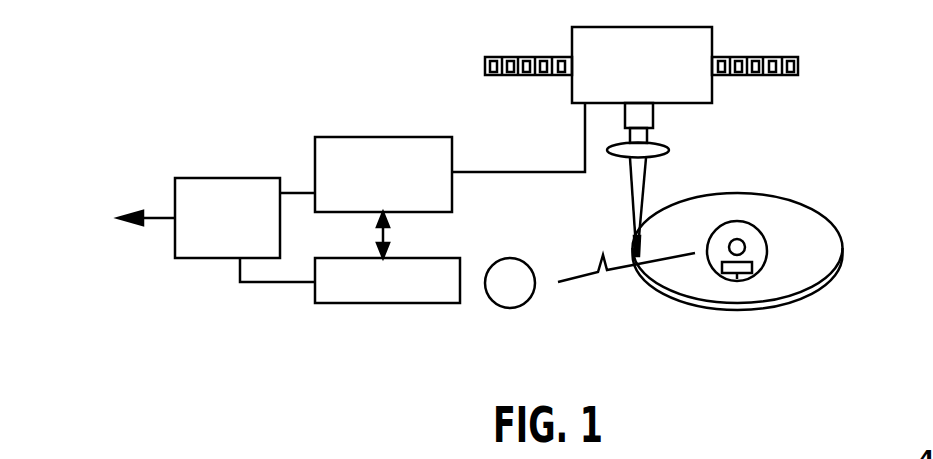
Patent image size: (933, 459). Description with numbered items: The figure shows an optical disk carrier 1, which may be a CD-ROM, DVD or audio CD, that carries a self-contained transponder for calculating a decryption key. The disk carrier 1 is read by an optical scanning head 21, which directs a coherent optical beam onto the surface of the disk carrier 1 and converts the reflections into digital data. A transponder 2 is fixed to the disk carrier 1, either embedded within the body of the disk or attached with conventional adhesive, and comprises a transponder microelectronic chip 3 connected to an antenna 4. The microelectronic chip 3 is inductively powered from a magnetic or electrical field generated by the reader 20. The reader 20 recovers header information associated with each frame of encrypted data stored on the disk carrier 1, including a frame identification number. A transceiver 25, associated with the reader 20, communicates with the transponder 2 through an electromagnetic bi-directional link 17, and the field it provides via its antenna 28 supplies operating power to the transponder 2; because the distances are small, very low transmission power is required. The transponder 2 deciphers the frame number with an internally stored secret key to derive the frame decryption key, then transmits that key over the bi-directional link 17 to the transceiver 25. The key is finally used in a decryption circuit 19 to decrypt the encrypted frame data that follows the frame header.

The optical disk carrier 1 is at (837, 228).
The transponder 2 is at (758, 253).
The transponder microelectronic chip 3 is at (757, 265).
The antenna 4 is at (710, 268).
The bi-directional link 17 is at (613, 278).
The decryption circuit 19 is at (197, 258).
The reader 20 is at (400, 137).
The optical scanning head 21 is at (707, 103).
The transceiver 25 is at (393, 303).
The antenna 28 is at (533, 297).